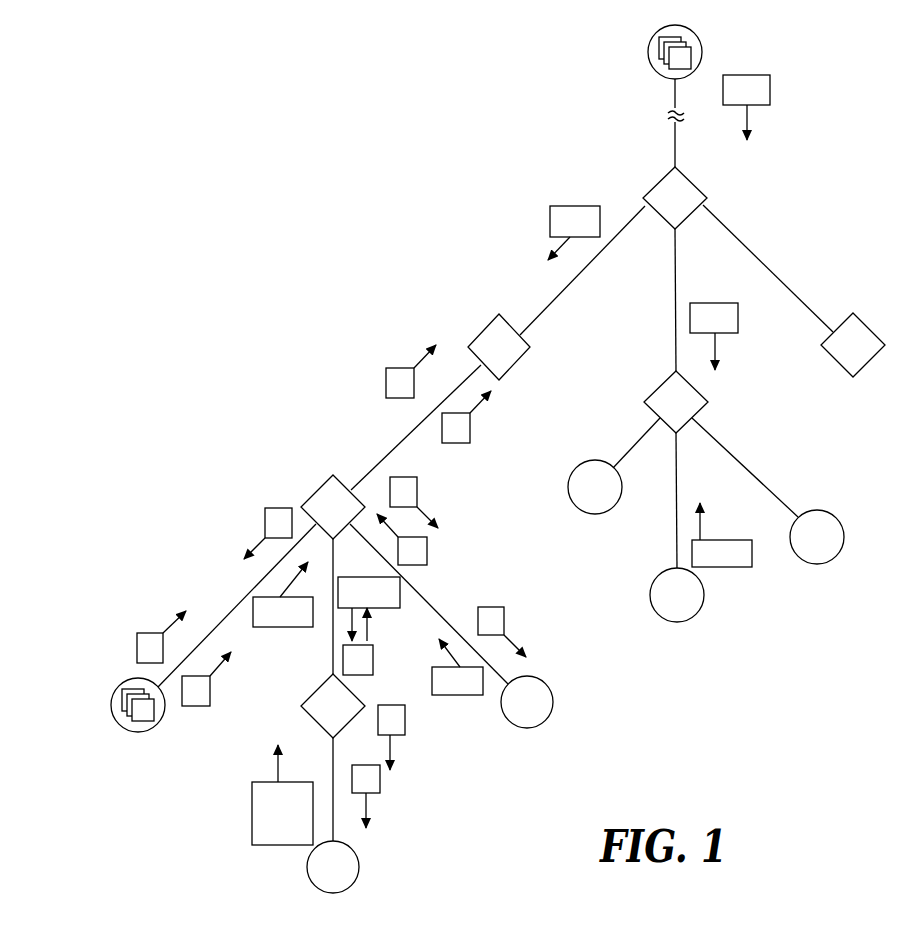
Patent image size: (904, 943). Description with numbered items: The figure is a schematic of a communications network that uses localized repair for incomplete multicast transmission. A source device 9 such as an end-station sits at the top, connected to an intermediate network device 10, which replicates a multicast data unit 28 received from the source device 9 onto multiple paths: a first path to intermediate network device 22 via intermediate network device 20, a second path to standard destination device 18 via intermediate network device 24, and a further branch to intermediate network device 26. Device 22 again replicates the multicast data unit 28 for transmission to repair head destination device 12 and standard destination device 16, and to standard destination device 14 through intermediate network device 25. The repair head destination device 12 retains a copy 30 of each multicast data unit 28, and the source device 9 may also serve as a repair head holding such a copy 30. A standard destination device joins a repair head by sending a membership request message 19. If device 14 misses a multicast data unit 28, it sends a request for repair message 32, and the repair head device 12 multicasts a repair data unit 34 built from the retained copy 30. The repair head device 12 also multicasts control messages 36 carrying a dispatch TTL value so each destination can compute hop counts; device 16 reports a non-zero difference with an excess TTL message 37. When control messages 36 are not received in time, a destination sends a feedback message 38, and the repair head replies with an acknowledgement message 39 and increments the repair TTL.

The source device 9 is at (700, 33).
The intermediate network device 10 is at (662, 211).
The repair head destination device 12 is at (120, 690).
The standard destination device 14 is at (320, 880).
The standard destination device 16 is at (514, 715).
The standard destination device 18 is at (664, 608).
The membership request message 19 is at (740, 567).
The intermediate network device 20 is at (486, 360).
The intermediate network device 22 is at (320, 520).
The intermediate network device 24 is at (663, 415).
The intermediate network device 25 is at (320, 719).
The intermediate network device 26 is at (840, 358).
The multicast data unit 28 is at (770, 83).
The copy of multicast data unit 30 is at (675, 60).
The request for repair message 32 is at (252, 815).
The repair data unit 34 is at (470, 428).
The control message 36 is at (400, 368).
The excess TTL message 37 is at (458, 695).
The feedback message 38 is at (280, 508).
The acknowledgement message 39 is at (270, 627).